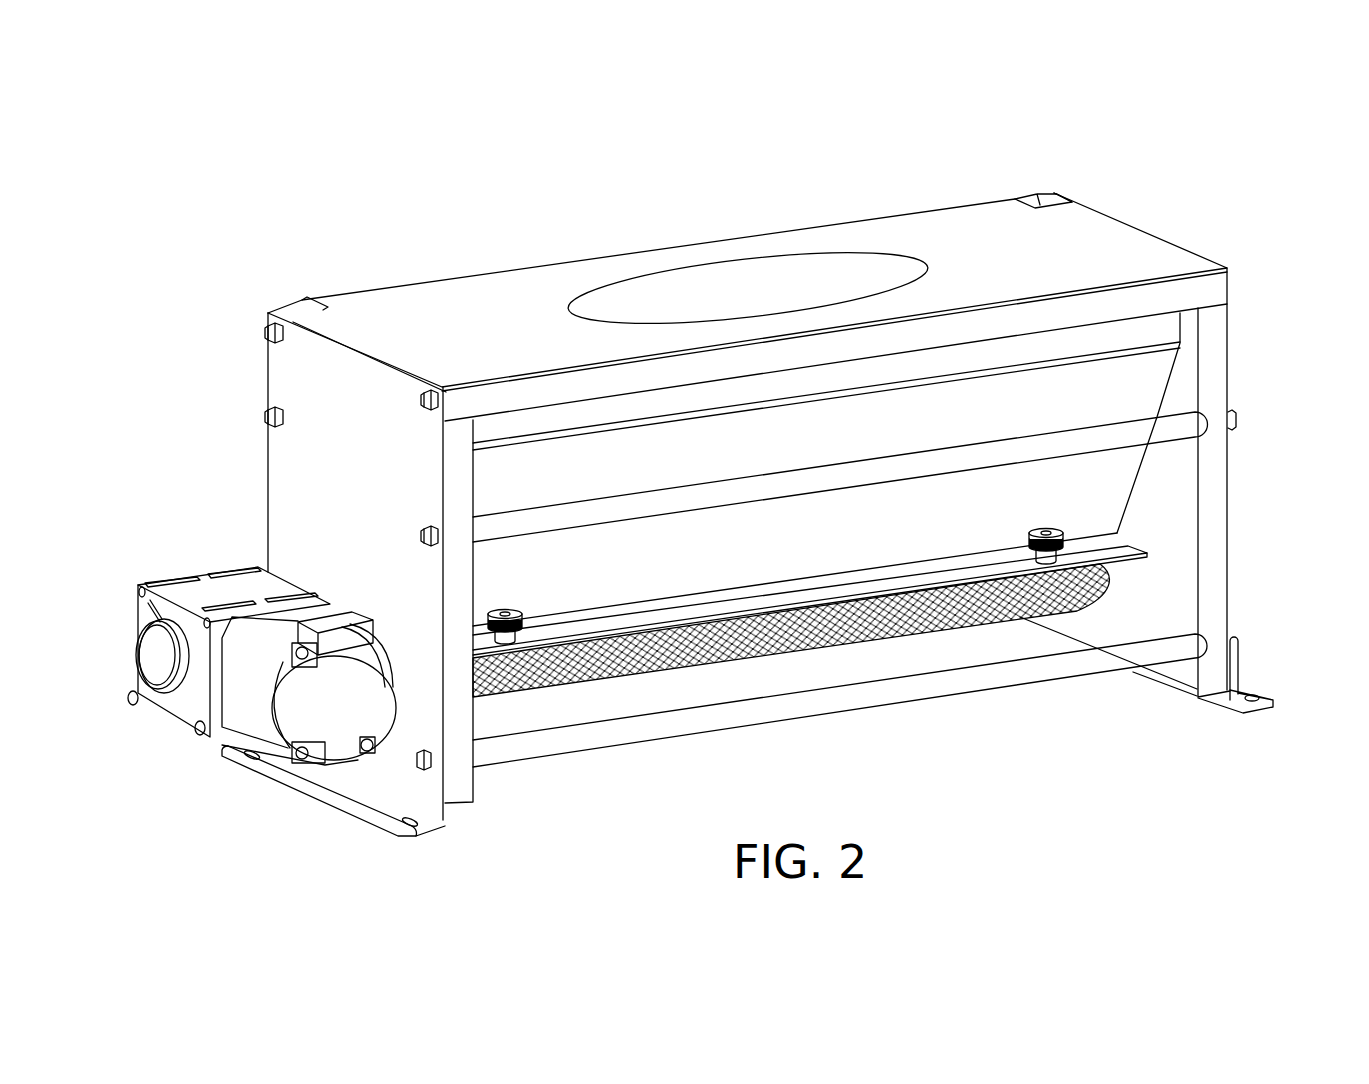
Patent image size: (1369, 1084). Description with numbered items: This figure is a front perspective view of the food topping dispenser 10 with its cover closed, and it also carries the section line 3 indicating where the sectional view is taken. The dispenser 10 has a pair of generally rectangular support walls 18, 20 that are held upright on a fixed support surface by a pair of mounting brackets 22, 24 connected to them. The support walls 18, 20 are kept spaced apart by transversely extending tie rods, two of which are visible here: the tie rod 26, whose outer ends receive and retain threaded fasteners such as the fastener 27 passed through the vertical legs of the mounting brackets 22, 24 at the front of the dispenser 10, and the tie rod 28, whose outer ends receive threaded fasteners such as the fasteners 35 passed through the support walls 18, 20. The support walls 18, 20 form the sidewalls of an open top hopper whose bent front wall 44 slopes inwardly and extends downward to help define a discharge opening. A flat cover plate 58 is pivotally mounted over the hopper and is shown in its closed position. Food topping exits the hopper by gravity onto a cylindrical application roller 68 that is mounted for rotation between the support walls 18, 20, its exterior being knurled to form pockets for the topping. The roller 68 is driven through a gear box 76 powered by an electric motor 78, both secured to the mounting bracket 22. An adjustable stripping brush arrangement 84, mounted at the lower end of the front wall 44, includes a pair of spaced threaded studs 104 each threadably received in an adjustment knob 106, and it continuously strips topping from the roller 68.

The food topping dispenser 10 is at (1036, 155).
The support wall 18 is at (290, 508).
The support wall 20 is at (1215, 366).
The mounting bracket 22 is at (440, 828).
The mounting bracket 24 is at (1258, 718).
The tie rod 26 is at (1009, 678).
The threaded fastener 27 is at (423, 752).
The tie rod 28 is at (1066, 438).
The threaded fastener 35 is at (263, 333).
The front wall 44 is at (1102, 481).
The cover plate 58 is at (918, 222).
The application roller 68 is at (830, 637).
The gear box 76 is at (147, 655).
The electric motor 78 is at (257, 713).
The stripping brush arrangement 84 is at (1068, 525).
The threaded stud 104 is at (506, 610).
The adjustment knob 106 is at (487, 622).
The section line 3- 3 is at (503, 830).